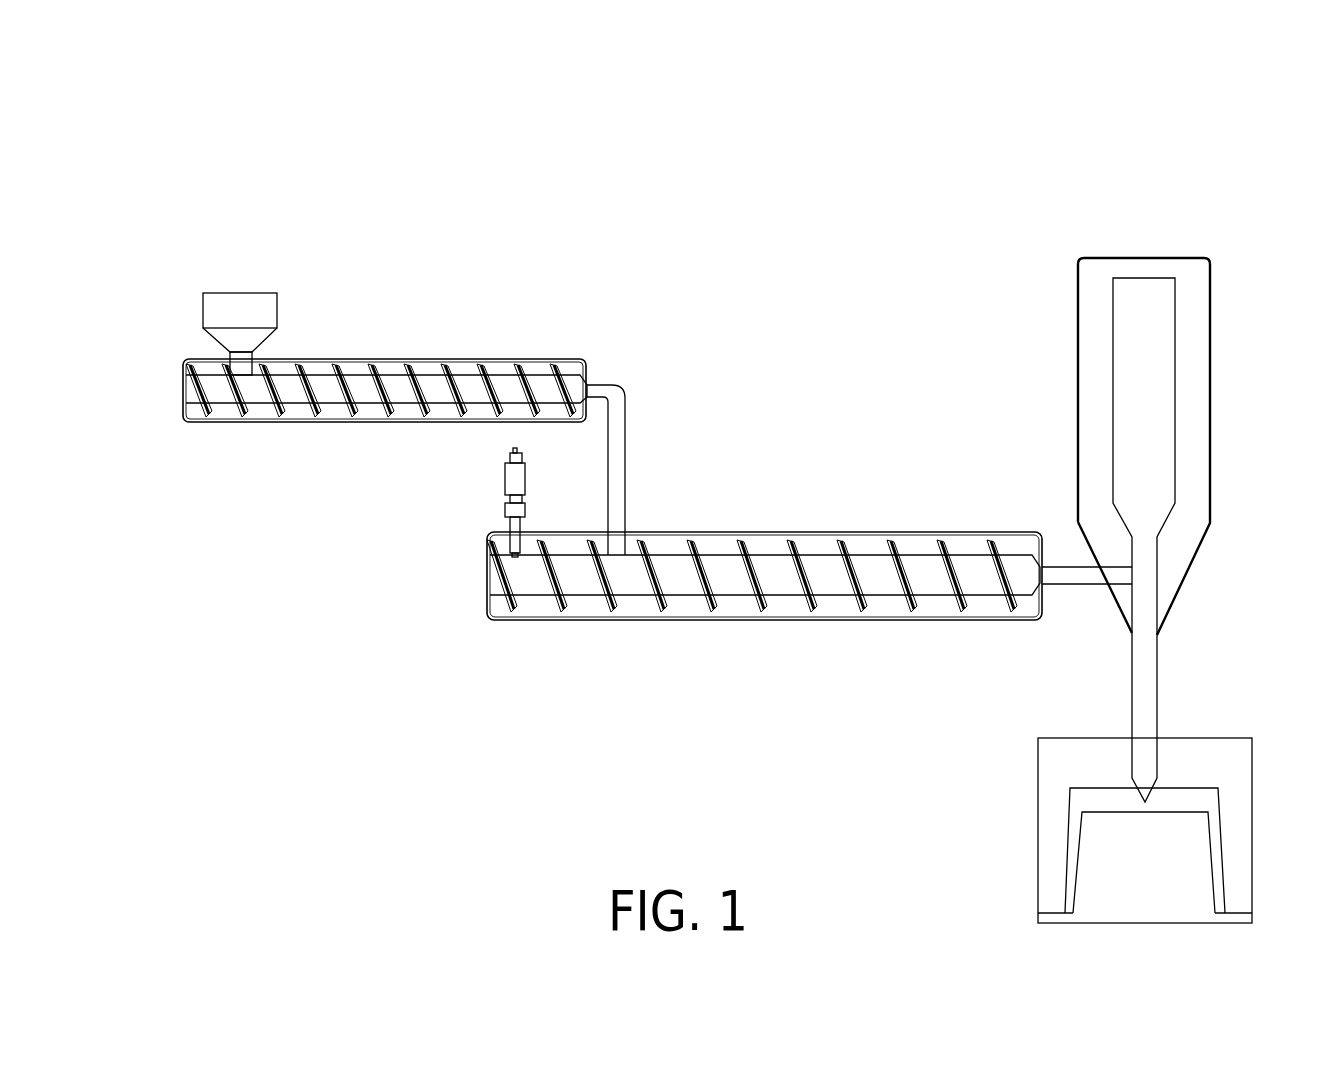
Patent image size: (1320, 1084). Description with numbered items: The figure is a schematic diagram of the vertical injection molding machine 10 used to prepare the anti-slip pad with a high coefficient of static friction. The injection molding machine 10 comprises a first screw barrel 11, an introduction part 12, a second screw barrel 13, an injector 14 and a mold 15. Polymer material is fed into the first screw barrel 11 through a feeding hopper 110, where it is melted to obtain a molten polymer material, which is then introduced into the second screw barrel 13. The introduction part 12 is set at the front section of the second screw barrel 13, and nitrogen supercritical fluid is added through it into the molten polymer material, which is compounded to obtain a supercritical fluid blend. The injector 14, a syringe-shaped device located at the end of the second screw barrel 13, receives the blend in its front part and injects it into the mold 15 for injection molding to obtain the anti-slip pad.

The vertical injection molding machine 10 is at (1112, 138).
The feeding hopper 110 is at (220, 308).
The first screw barrel 11 is at (367, 370).
The introduction part 12 is at (520, 485).
The second screw barrel 13 is at (762, 542).
The injector 14 is at (1198, 328).
The mold 15 is at (1202, 753).